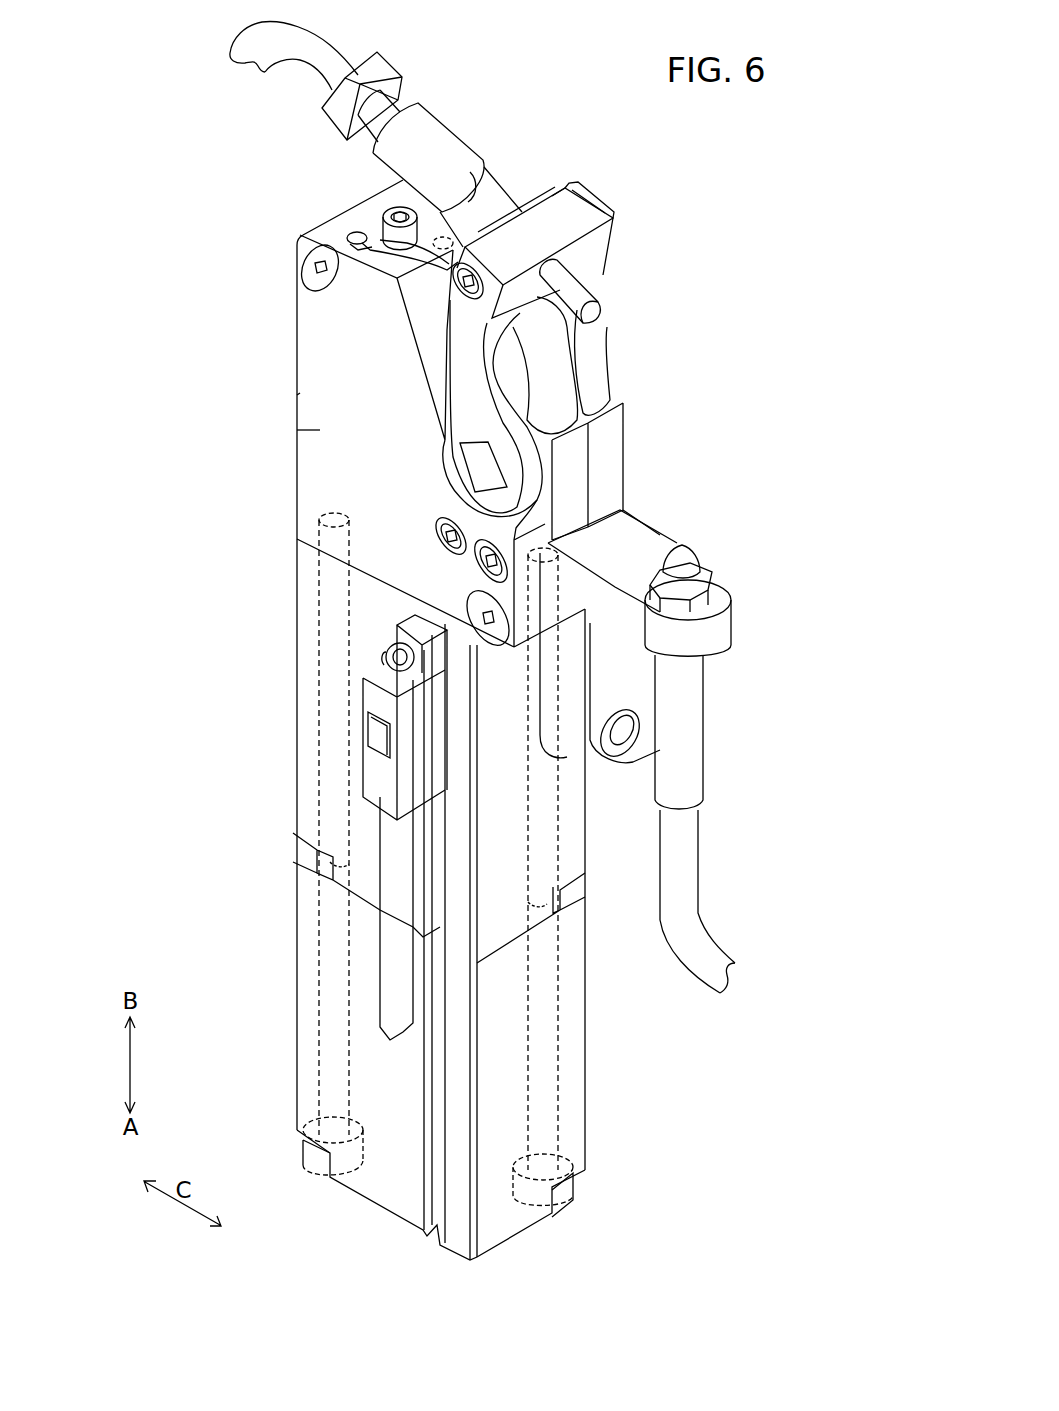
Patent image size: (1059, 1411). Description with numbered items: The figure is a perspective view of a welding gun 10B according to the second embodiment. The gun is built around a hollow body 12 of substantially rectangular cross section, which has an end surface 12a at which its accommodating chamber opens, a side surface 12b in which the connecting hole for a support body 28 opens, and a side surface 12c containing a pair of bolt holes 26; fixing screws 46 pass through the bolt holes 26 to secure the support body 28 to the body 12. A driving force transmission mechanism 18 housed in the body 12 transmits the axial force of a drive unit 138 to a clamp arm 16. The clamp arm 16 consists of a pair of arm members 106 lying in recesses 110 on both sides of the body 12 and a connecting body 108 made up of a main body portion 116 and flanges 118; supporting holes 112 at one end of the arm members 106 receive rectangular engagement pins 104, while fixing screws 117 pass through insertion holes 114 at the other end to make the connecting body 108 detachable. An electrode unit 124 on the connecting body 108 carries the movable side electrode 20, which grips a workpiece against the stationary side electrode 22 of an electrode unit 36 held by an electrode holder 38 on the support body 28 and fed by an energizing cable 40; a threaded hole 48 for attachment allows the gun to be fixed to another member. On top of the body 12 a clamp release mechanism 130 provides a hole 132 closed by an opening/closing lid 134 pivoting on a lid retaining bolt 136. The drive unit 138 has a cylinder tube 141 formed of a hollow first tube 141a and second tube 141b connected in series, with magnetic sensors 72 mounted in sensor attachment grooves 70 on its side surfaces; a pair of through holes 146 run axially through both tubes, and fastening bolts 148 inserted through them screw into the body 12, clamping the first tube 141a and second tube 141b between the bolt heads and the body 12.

The welding gun 10B is at (755, 135).
The body 12 is at (288, 333).
The end surface 12a is at (297, 556).
The side surface 12b is at (523, 605).
The side surface 12c is at (300, 393).
The clamp arm 16 is at (626, 197).
The driving force transmission mechanism 18 is at (323, 430).
The movable side electrode 20 is at (597, 313).
The stationary side electrode 22 is at (685, 557).
The bolt holes 26 is at (480, 565).
The support body 28 is at (736, 622).
The electrode unit 36 is at (716, 558).
The electrode holder 38 is at (698, 775).
The energizing cable 40 is at (686, 896).
The fixing screws 46 is at (442, 538).
The threaded hole for attachment 48 is at (622, 747).
The sensor attachment grooves 70 is at (440, 857).
The magnetic sensors 72 is at (375, 696).
The engagement pins 104 is at (470, 460).
The arm members 106 is at (438, 394).
The connecting body 108 is at (549, 195).
The recesses 110 is at (425, 320).
The supporting holes 112 is at (487, 460).
The insertion holes 114 is at (465, 292).
The main body portion 116 is at (527, 198).
The fixing screws 117 is at (482, 266).
The flanges 118 is at (487, 327).
The electrode unit 124 is at (601, 298).
The clamp release mechanism 130 is at (422, 206).
The hole 132 is at (445, 236).
The opening/closing lid 134 is at (405, 277).
The lid retaining bolt 136 is at (386, 226).
The drive unit 138 is at (292, 643).
The cylinder tube 141 is at (220, 797).
The first tube 141a is at (302, 797).
The second tube 141b is at (302, 897).
The through holes 146 is at (340, 988).
The fastening bolts 148 is at (313, 1162).